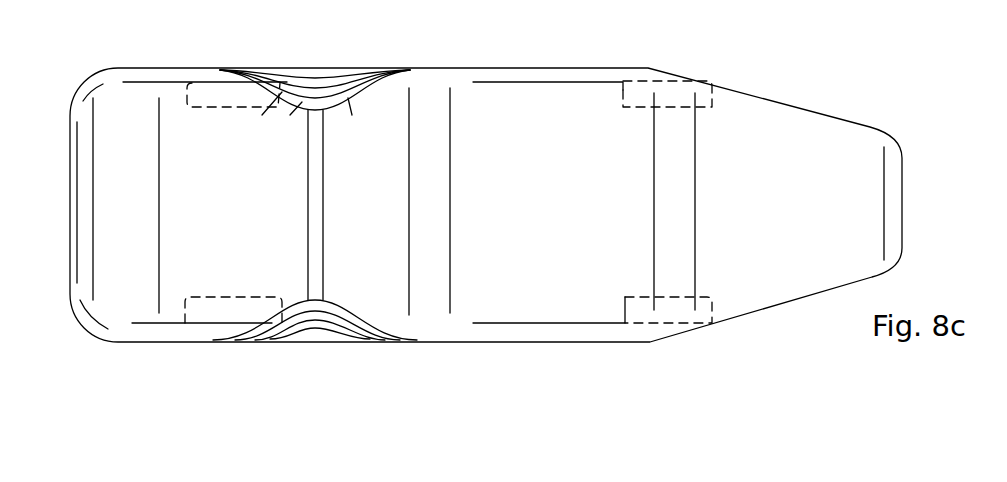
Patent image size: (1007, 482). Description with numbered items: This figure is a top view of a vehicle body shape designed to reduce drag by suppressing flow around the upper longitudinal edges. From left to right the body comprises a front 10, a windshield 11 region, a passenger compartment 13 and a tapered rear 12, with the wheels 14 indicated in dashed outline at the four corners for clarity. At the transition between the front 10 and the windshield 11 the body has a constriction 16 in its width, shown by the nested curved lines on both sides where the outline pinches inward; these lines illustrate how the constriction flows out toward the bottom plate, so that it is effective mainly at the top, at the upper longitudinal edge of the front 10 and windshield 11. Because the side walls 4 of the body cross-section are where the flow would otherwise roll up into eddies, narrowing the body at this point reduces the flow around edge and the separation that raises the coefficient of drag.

The walls 4 is at (328, 78).
The front 10 is at (213, 253).
The windshield 11 is at (385, 248).
The rear 12 is at (735, 220).
The passenger compartment 13 is at (547, 240).
The wheels 14 is at (212, 315).
The constriction 16 is at (315, 110).